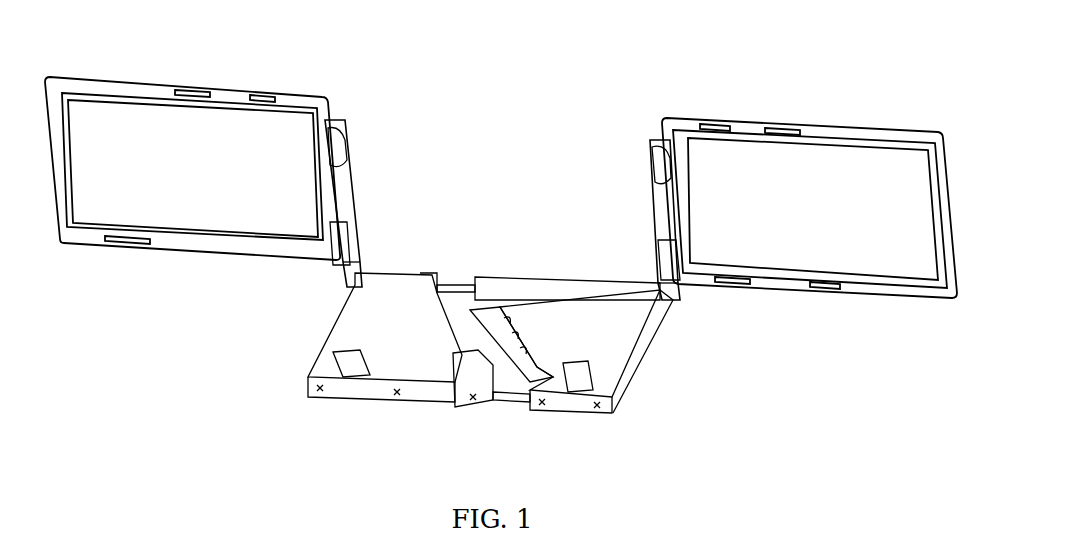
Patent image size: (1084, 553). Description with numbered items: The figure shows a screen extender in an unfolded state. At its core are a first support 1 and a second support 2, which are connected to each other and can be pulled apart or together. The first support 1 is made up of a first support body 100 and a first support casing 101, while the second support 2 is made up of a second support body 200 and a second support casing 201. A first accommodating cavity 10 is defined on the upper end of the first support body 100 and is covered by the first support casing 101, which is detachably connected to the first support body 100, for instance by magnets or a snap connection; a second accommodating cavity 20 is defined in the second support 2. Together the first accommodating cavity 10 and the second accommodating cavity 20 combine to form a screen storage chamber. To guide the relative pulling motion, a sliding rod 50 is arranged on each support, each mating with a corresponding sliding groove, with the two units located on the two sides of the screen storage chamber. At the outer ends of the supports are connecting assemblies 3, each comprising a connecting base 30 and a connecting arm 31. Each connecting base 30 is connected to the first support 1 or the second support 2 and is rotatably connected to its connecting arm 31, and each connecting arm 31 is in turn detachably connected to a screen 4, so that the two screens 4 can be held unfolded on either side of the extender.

The first support 1 is at (345, 343).
The second support 2 is at (620, 351).
The connecting assembly 3 is at (412, 205).
The screen 4 is at (163, 85).
The first accommodating cavity 10 is at (455, 353).
The second accommodating cavity 20 is at (495, 310).
The connecting base 30 is at (360, 265).
The connecting arm 31 is at (337, 150).
The sliding rod 50 is at (447, 282).
The first support body 100 is at (340, 393).
The first support casing 101 is at (352, 330).
The second support body 200 is at (630, 367).
The second support casing 201 is at (622, 333).